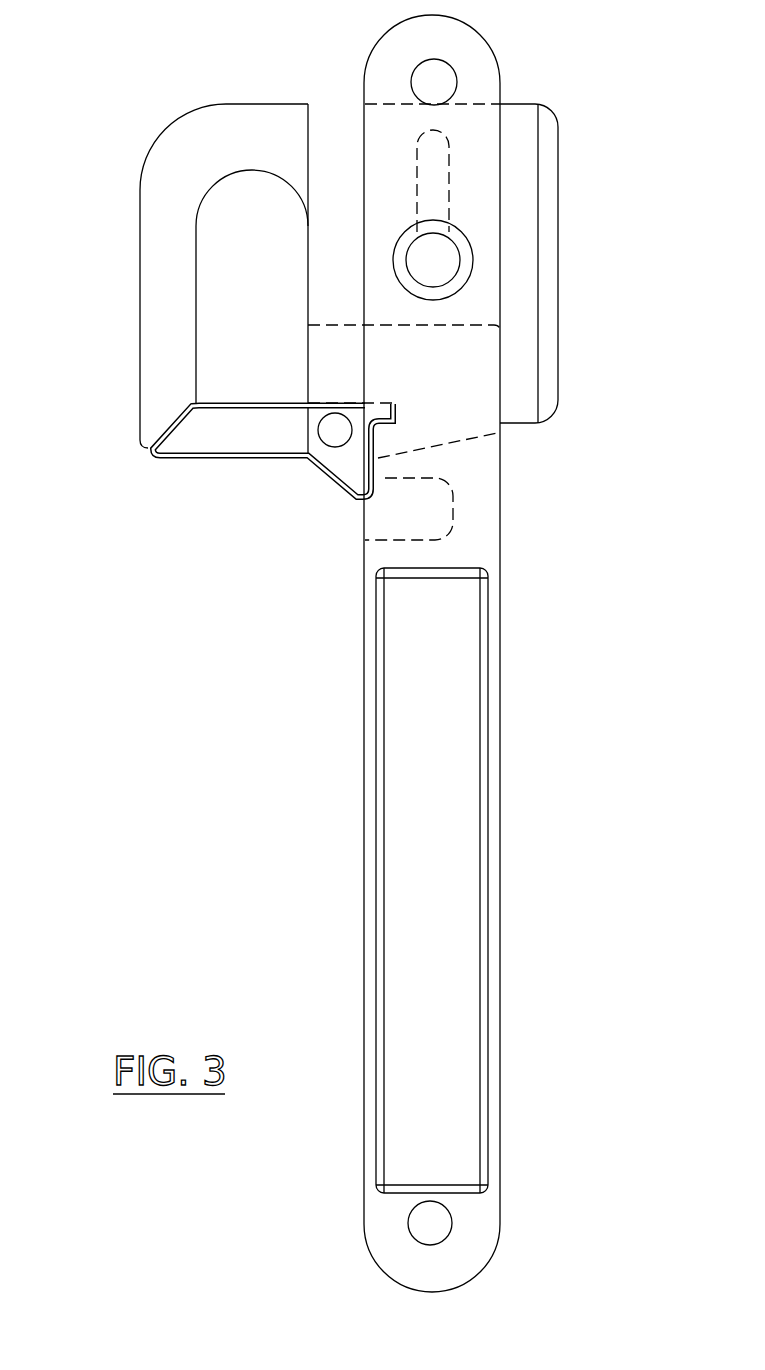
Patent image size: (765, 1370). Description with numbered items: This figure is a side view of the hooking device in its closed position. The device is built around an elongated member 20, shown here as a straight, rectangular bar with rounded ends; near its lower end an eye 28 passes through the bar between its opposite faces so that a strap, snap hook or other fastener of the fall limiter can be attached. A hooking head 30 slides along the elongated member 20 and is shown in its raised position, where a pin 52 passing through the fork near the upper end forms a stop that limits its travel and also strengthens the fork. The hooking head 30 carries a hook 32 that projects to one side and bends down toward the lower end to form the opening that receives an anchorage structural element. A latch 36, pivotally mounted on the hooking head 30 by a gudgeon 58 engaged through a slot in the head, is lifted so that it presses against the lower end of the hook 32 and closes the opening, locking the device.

The elongated member 20 is at (517, 859).
The eye 28 is at (415, 1228).
The hooking head 30 is at (160, 118).
The hook 32 is at (153, 176).
The latch 36 is at (210, 442).
The pin 52 is at (447, 73).
The gudgeon 58 is at (330, 437).